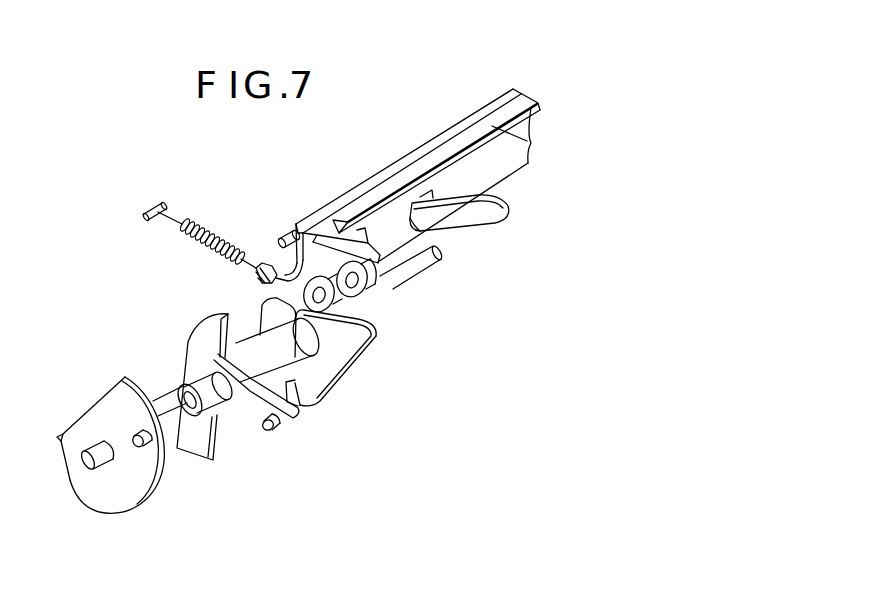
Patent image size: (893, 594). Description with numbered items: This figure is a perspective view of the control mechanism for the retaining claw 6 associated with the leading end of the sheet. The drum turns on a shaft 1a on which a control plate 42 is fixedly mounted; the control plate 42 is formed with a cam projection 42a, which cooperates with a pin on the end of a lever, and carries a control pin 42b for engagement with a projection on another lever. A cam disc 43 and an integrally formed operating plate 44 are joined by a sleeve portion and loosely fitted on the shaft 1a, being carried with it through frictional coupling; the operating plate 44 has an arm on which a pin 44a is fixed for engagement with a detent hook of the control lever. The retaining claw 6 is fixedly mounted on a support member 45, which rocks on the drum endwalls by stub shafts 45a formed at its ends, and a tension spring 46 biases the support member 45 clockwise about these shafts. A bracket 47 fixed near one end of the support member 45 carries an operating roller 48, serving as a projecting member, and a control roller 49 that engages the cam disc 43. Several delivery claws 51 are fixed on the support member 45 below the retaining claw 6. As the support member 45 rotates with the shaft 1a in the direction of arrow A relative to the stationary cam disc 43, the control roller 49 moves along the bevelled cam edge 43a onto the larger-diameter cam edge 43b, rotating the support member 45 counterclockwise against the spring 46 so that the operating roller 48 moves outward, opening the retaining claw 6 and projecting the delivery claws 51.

The retaining claw 6 is at (531, 143).
The support member 45 is at (386, 177).
The stub shaft 45a is at (282, 239).
The tension spring 46 is at (222, 236).
The bracket 47 is at (323, 245).
The operating roller 48 is at (370, 276).
The control roller 49 is at (343, 300).
The delivery claw 51 is at (487, 219).
The arrow A is at (260, 303).
The cam disc 43 is at (347, 391).
The bevelled cam edge 43a is at (305, 407).
The cam edge 43b is at (334, 402).
The operating plate 44 is at (238, 409).
The pin 44a is at (268, 431).
The shaft 1a is at (168, 403).
The control plate 42 is at (89, 454).
The cam projection 42a is at (61, 441).
The control pin 42b is at (134, 432).